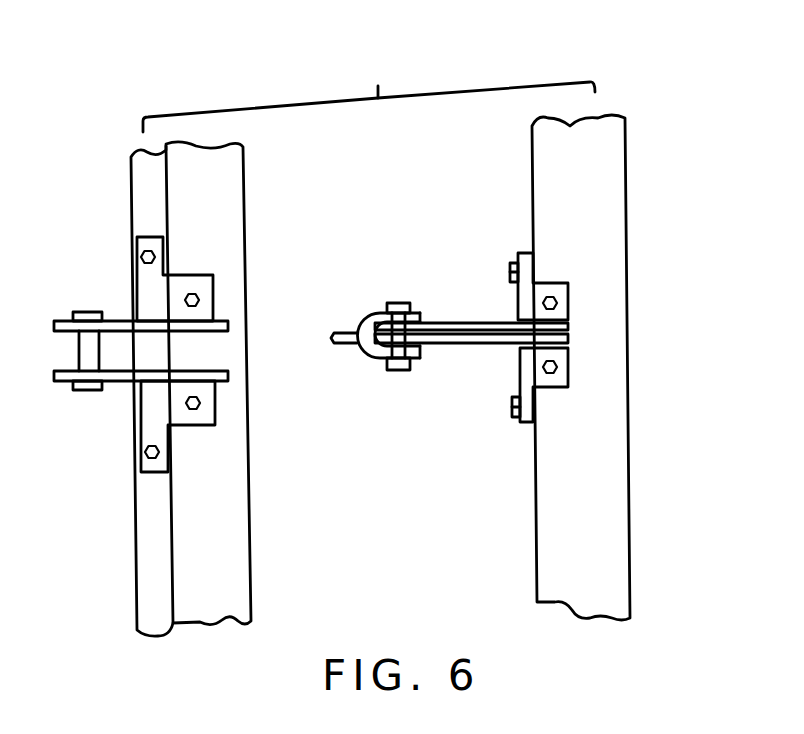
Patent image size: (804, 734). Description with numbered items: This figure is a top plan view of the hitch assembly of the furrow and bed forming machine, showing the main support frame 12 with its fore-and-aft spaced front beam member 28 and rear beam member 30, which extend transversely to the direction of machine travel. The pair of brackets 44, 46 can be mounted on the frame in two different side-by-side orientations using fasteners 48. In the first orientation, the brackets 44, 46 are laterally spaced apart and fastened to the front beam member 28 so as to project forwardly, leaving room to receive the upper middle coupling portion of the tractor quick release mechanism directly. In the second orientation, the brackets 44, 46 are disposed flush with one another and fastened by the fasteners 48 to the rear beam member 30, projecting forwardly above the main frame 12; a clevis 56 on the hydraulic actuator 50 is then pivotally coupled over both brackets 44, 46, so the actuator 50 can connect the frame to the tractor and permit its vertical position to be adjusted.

The main support frame 12 is at (386, 78).
The front beam member 28 is at (247, 192).
The rear beam member 30 is at (628, 207).
The bracket 44 is at (120, 320).
The bracket 46 is at (115, 383).
The fasteners 48 is at (192, 297).
The hydraulic actuator 50 is at (333, 330).
The clevis 56 is at (367, 363).